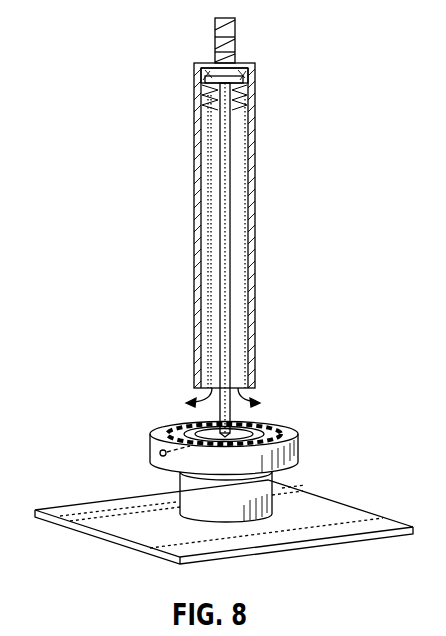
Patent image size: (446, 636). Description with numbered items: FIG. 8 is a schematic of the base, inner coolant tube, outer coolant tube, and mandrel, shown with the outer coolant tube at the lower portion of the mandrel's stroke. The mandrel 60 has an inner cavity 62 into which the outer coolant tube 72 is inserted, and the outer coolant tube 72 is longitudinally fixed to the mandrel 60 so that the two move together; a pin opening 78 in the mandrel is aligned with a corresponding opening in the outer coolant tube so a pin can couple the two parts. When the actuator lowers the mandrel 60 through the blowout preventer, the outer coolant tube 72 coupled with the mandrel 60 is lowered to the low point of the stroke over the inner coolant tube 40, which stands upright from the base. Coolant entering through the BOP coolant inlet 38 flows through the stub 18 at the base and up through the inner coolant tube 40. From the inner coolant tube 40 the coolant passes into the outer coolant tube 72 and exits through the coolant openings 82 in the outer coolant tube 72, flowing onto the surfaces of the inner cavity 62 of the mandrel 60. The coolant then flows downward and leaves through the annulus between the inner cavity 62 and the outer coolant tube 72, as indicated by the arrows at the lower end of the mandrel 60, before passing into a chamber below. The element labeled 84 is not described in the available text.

The stub 18 is at (300, 450).
The BOP coolant inlet 38 is at (159, 455).
The inner coolant tube 40 is at (249, 422).
The mandrel 60 is at (240, 67).
The inner cavity 62 is at (251, 216).
The outer coolant tube 72 is at (232, 188).
The pin opening 78 is at (249, 86).
The coolant openings 82 is at (224, 78).
The cap 84 is at (212, 68).